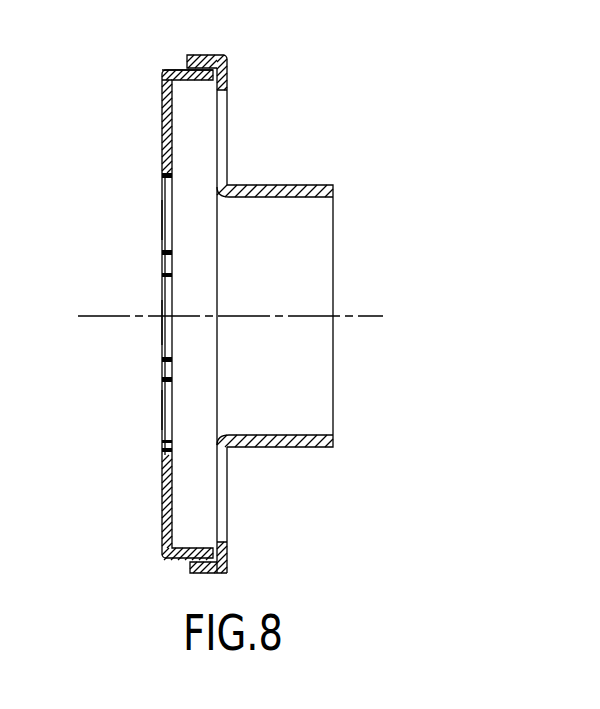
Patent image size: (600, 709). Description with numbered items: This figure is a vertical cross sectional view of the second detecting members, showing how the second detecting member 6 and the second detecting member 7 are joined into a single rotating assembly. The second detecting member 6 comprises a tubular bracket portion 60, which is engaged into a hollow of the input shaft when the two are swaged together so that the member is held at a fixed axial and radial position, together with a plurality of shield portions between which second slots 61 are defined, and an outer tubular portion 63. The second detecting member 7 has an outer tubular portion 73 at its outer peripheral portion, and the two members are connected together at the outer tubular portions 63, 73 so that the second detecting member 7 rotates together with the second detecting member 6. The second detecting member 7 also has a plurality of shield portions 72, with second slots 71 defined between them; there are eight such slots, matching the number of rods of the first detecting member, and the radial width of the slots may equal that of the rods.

The second detecting member 6 is at (280, 287).
The second detecting member 7 is at (153, 101).
The tubular bracket portion 60 is at (306, 185).
The second slots 61 is at (228, 125).
The outer tubular portion 63 is at (199, 56).
The second slots 71 is at (165, 182).
The shield portions 72 is at (162, 143).
The outer tubular portion 73 is at (176, 69).